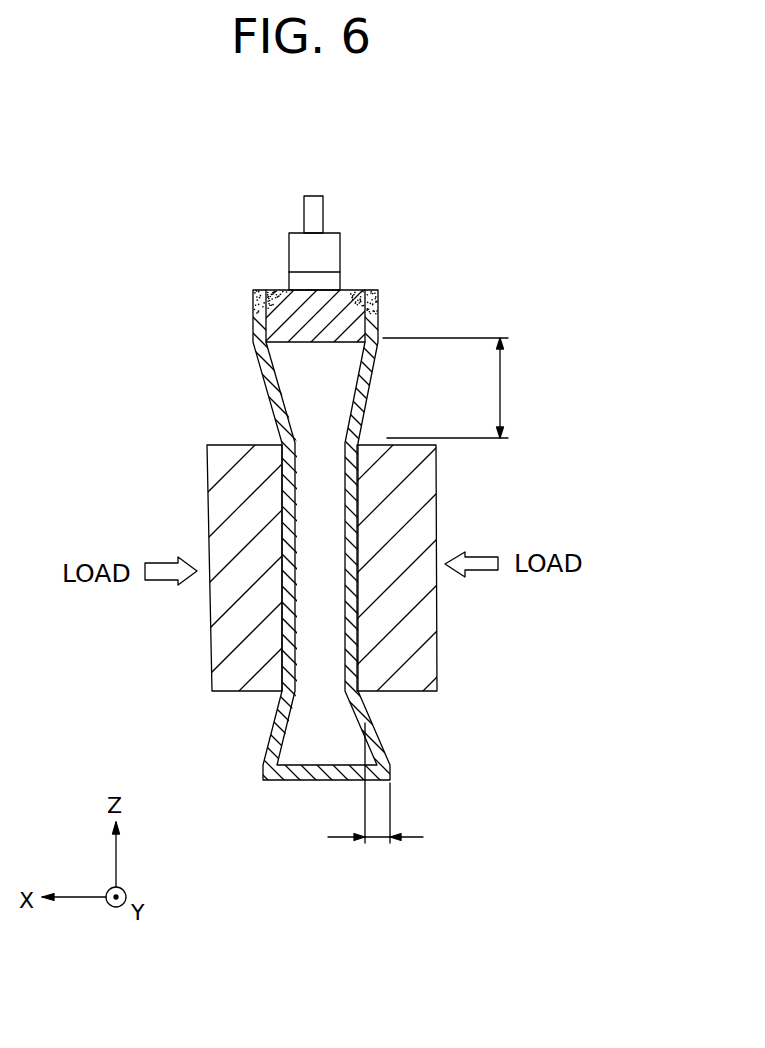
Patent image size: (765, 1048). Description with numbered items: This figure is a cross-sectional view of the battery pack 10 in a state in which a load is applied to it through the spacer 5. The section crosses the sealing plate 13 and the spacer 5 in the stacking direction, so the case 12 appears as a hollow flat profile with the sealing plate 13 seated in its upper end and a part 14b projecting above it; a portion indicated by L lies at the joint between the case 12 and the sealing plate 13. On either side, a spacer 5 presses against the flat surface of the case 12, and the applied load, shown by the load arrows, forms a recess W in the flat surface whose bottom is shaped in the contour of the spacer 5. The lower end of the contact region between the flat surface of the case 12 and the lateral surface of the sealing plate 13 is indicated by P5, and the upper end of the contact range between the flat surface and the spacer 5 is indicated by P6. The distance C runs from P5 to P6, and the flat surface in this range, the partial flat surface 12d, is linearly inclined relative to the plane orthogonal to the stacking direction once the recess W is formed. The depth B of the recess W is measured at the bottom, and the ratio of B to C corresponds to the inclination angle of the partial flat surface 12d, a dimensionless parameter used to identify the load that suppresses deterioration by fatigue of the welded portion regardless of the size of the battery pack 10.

The battery pack 10 is at (247, 192).
The pin portion 14b is at (320, 208).
The sealing plate 13 is at (327, 297).
The bonding layer L is at (273, 293).
The case 12 is at (379, 326).
The partial flat surface 12d is at (388, 341).
The lower end of contact region P5 is at (358, 347).
The upper end of contact range P6 is at (363, 437).
The distance C is at (454, 388).
The spacer 5 is at (223, 665).
The recess W is at (278, 700).
The depth of the recess B is at (375, 798).